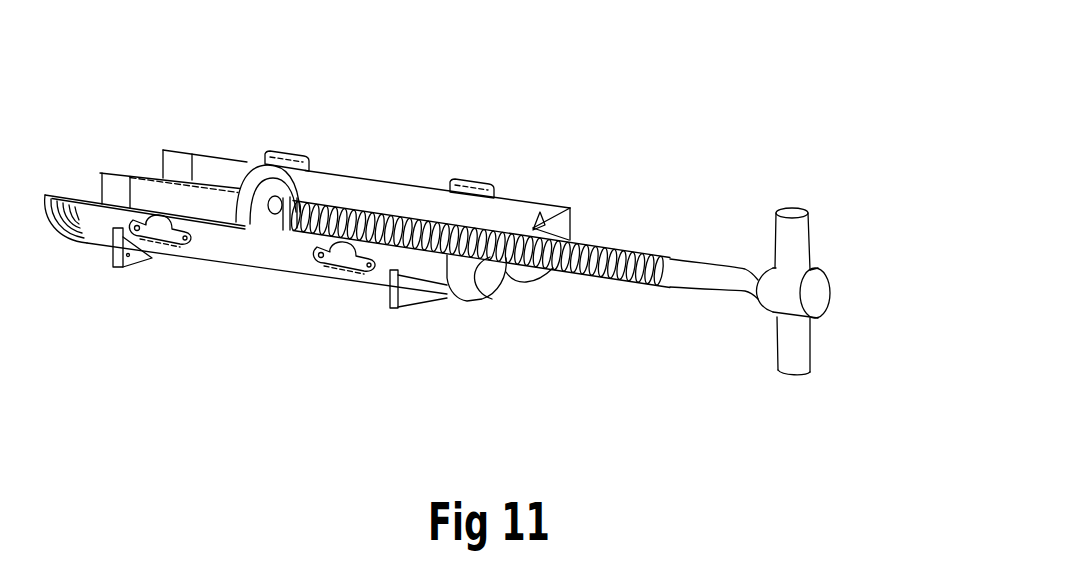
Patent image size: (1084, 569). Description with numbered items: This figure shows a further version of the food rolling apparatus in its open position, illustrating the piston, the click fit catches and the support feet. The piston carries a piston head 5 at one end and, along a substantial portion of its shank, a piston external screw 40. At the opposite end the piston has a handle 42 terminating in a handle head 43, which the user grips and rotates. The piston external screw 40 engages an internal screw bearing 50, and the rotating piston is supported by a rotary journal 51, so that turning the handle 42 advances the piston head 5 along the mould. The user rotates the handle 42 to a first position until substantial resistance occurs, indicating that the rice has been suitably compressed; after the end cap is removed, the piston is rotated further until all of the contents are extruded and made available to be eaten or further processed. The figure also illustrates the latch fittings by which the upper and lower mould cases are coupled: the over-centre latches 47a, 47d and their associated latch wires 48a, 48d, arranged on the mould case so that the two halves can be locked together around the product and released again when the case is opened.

The piston head 5 is at (247, 178).
The piston external screw 40 is at (607, 238).
The handle 42 is at (800, 232).
The handle head 43 is at (822, 290).
The over-centre latch 47a is at (357, 267).
The over-centre latch 47d is at (477, 178).
The latch wire 48a is at (171, 240).
The latch wire 48d is at (292, 155).
The internal screw bearing 50 is at (537, 222).
The rotary journal 51 is at (297, 183).